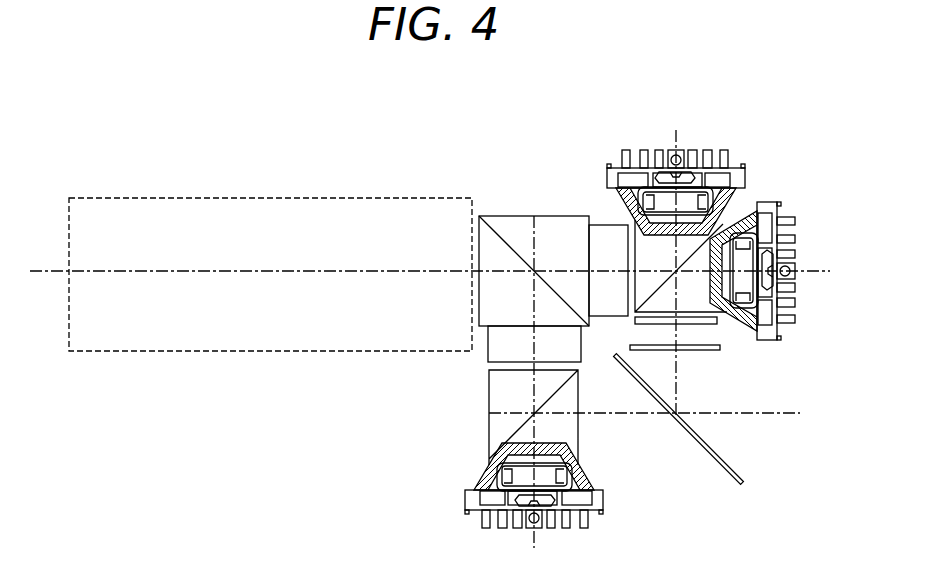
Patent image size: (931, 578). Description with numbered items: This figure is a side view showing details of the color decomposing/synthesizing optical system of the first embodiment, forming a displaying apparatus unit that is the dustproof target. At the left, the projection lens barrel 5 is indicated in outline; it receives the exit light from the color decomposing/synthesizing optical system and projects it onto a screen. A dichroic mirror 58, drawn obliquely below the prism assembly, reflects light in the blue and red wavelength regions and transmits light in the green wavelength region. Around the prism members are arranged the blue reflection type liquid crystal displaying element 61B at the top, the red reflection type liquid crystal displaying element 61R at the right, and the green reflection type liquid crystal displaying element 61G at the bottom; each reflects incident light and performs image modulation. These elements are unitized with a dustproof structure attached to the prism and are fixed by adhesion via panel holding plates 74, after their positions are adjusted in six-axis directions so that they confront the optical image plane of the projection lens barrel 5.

The projection lens barrel 5 is at (325, 217).
The dichroic mirror 58 is at (731, 466).
The blue reflection type liquid crystal displaying element 61B is at (645, 152).
The green reflection type liquid crystal displaying element 61G is at (467, 502).
The red reflection type liquid crystal displaying element 61R is at (771, 338).
The panel holding plate 74 is at (620, 212).